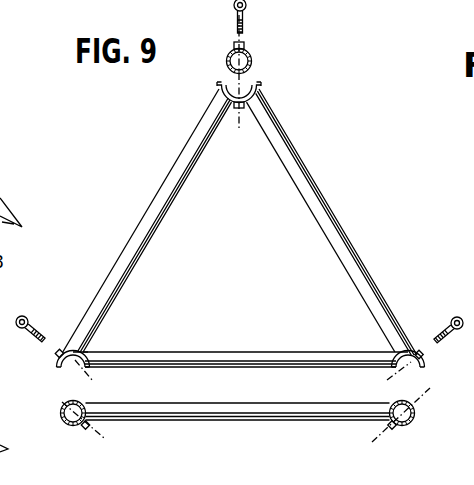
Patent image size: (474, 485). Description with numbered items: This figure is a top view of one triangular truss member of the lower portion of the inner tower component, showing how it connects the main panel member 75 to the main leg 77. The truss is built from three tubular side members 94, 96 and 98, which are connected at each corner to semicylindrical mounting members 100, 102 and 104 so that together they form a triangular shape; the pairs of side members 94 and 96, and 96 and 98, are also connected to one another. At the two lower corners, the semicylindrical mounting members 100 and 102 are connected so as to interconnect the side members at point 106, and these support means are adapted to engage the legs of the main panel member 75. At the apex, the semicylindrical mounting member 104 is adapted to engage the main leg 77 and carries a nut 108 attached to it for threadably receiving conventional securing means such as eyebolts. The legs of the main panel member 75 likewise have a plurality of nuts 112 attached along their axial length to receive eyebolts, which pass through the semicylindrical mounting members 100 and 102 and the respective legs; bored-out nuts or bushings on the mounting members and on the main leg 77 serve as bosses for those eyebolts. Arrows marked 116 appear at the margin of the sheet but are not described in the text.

The main panel member 75 is at (256, 410).
The main leg 77 is at (226, 63).
The tubular side member 94 is at (177, 175).
The tubular side member 96 is at (218, 352).
The tubular side member 98 is at (298, 178).
The semicylindrical mounting member 100 is at (57, 366).
The semicylindrical mounting member 102 is at (425, 367).
The semicylindrical mounting member 104 is at (259, 89).
The point 106 is at (88, 352).
The nut 108 is at (228, 104).
The nut 112 is at (84, 429).
The arrow / direction indicator 116 is at (9, 476).